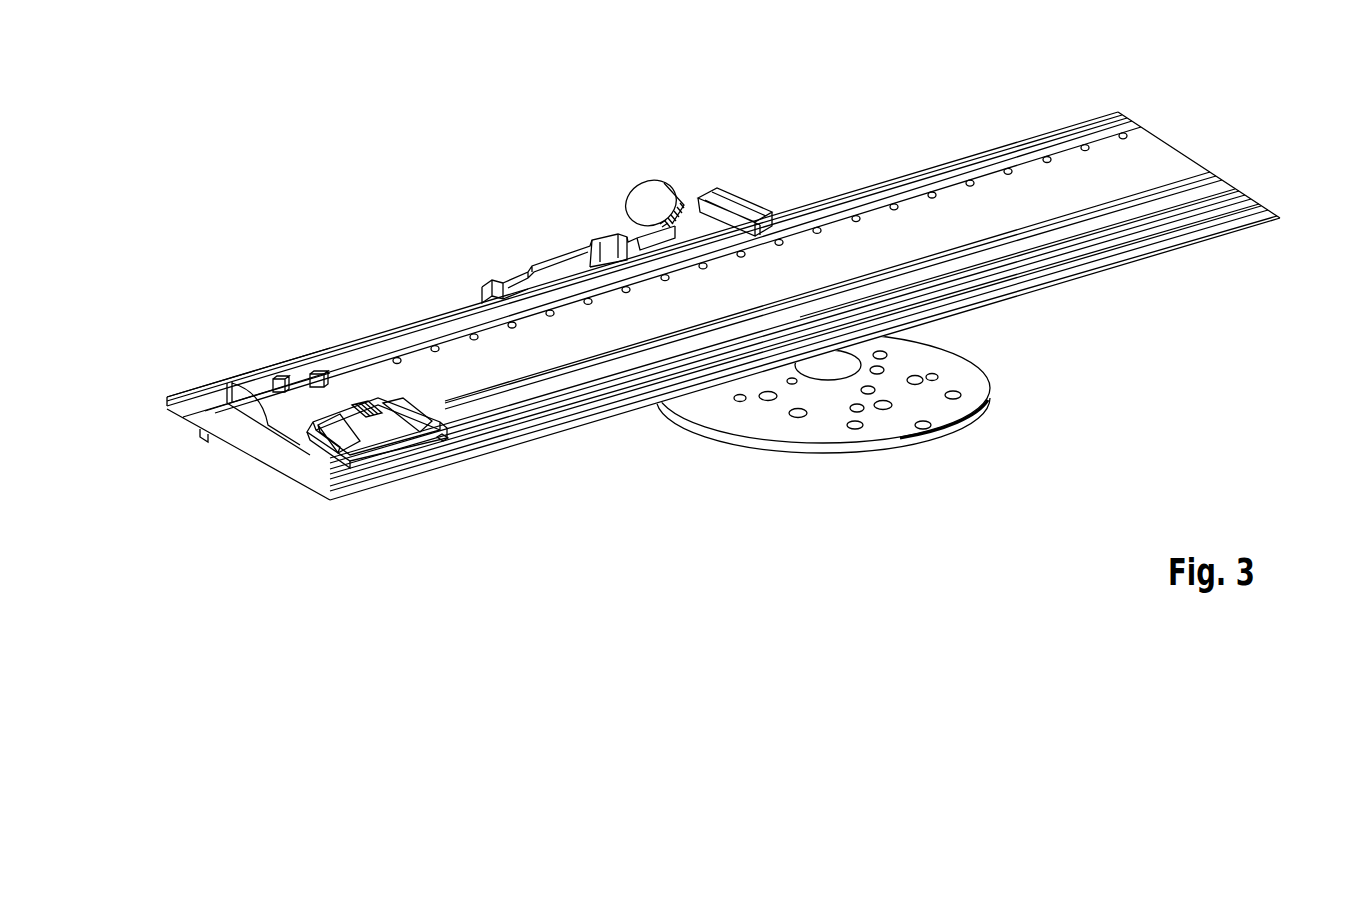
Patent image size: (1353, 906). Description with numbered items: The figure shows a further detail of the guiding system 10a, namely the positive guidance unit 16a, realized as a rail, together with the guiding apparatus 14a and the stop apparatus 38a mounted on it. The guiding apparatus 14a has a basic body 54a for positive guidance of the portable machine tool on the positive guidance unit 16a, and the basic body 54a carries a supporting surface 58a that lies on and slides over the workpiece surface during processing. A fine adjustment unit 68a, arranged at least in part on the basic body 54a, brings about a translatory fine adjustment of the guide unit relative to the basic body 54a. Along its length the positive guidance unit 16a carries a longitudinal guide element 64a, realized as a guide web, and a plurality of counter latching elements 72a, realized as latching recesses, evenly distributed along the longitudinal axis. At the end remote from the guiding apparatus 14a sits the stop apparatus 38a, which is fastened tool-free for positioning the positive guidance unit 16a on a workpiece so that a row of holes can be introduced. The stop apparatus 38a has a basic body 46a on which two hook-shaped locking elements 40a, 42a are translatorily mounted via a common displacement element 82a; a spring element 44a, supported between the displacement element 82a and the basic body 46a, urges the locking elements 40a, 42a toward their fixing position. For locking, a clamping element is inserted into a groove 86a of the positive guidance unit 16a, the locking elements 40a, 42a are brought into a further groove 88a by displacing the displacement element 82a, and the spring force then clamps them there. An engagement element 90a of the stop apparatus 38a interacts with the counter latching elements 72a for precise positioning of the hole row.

The guiding system 10a is at (441, 141).
The positive guidance unit 16a is at (1170, 105).
The counter latching element 72a is at (515, 322).
The fine adjustment unit 68a is at (684, 170).
The basic body 54a is at (732, 205).
The guiding apparatus 14a is at (782, 488).
The supporting surface 58a is at (770, 402).
The stop apparatus 38a is at (293, 320).
The longitudinal guide element 64a is at (203, 432).
The groove 86a is at (203, 400).
The basic body 46a is at (258, 420).
The engagement element 90a is at (290, 375).
The locking element 40a is at (350, 462).
The spring element 44a is at (388, 463).
The locking element 42a is at (443, 442).
The displacement element 82a is at (323, 450).
The further groove 88a is at (316, 490).